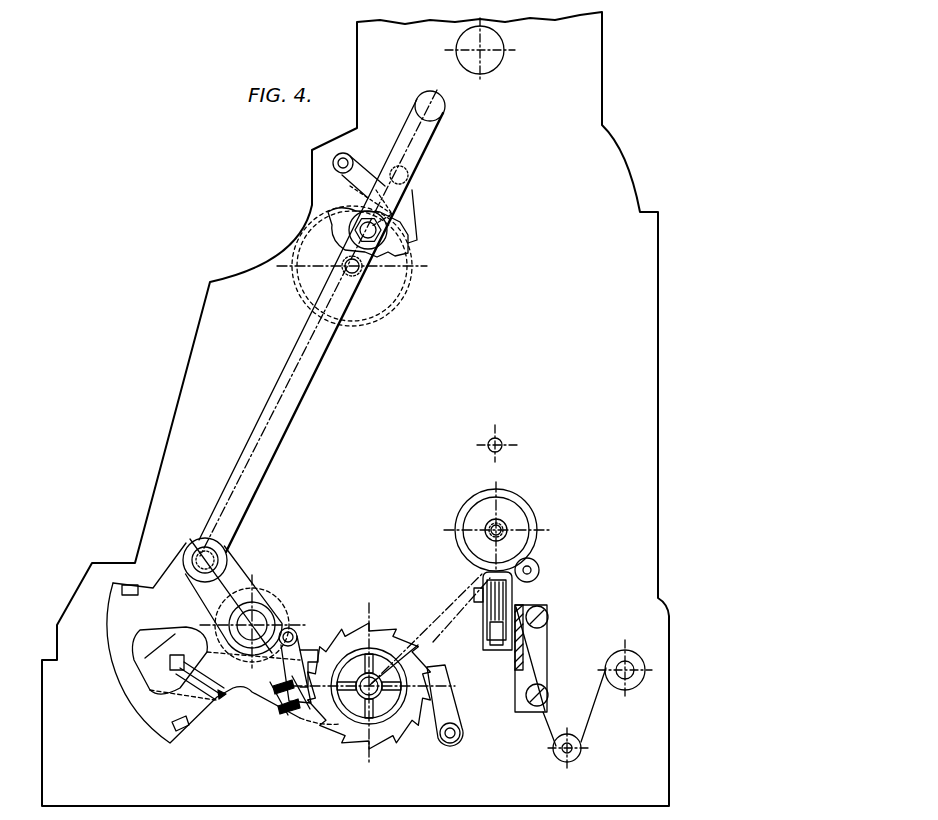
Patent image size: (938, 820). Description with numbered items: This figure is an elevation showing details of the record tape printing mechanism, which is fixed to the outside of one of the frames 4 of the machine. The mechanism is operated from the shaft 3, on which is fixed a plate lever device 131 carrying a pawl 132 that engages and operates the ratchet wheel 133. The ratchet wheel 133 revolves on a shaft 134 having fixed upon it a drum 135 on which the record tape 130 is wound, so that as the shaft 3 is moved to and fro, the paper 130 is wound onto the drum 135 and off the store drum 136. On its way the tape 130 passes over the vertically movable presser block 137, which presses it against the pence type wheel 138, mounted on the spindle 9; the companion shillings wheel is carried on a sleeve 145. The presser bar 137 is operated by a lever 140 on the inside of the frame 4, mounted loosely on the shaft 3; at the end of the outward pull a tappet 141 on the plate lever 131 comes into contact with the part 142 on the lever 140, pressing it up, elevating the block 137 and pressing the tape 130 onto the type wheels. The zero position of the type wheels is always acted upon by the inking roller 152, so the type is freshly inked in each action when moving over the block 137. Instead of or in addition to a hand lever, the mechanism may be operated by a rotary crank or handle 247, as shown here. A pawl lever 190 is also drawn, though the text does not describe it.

The frame 4 is at (330, 193).
The rotary crank or handle 247 is at (413, 162).
The shaft 3 is at (263, 620).
The plate lever device 131 is at (125, 670).
The tappet 141 is at (222, 698).
The pawl 190 is at (278, 676).
The part 142 is at (272, 712).
The pawl 132 is at (293, 658).
The drum 135 is at (322, 721).
The ratchet wheel 133 is at (373, 630).
The shaft 134 is at (417, 689).
The pence type wheel 138 is at (472, 542).
The spindle 9 is at (490, 528).
The sleeve 145 is at (508, 524).
The inking roller 152 is at (539, 565).
The presser block 137 is at (482, 574).
The lever 140 is at (496, 646).
The record tape 130 is at (594, 712).
The store drum 136 is at (622, 651).